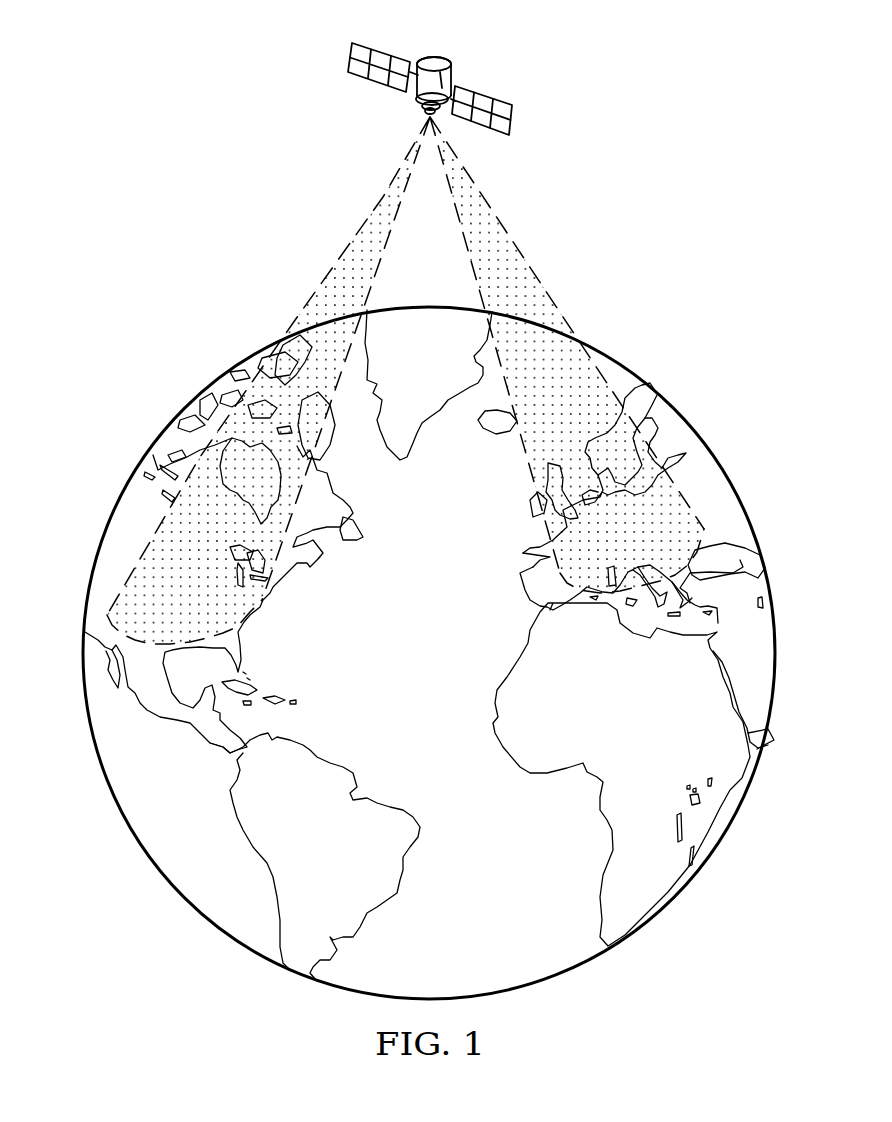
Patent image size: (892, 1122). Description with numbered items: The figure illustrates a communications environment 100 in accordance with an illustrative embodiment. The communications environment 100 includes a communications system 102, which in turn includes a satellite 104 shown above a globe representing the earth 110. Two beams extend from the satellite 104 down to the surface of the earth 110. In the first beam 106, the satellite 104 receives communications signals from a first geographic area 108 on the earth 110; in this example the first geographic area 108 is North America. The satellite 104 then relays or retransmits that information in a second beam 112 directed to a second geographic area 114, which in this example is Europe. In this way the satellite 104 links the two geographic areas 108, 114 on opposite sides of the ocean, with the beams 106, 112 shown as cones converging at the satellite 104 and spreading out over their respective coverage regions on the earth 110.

The communications environment 100 is at (99, 187).
The communications system 102 is at (285, 238).
The satellite 104 is at (437, 57).
The beam 106 is at (380, 195).
The first geographic area 108 is at (248, 605).
The earth 110 is at (151, 429).
The beam 112 is at (512, 242).
The second geographic area 114 is at (558, 537).